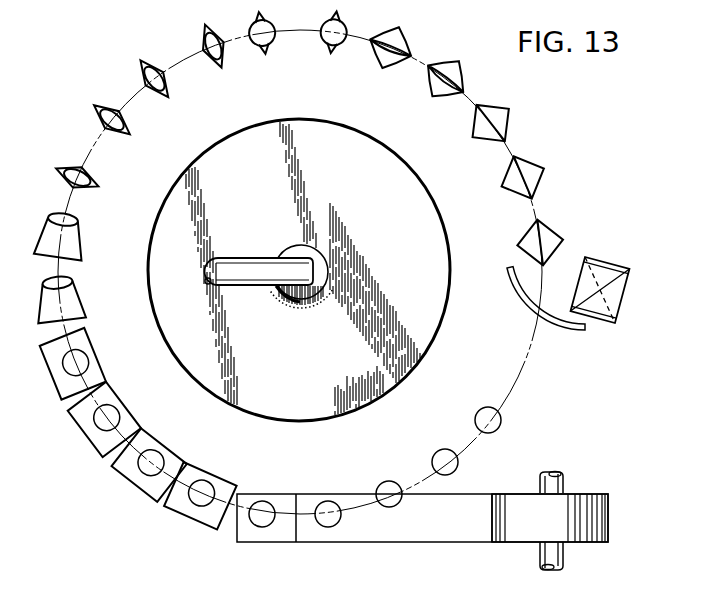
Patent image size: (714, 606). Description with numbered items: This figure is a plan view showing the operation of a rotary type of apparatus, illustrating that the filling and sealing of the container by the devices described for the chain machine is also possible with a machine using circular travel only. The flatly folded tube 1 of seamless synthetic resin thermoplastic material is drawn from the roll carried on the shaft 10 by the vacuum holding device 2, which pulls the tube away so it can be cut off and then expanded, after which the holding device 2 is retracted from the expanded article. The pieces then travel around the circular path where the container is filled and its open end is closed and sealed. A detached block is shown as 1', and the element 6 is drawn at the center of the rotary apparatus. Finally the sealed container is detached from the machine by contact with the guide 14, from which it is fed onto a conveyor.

The shaft 6 is at (244, 285).
The holding device 2 is at (501, 420).
The flatly folded tube 1 is at (550, 500).
The carrier block (detached) 1' is at (600, 275).
The shaft 10 is at (538, 548).
The guide 14 is at (556, 335).